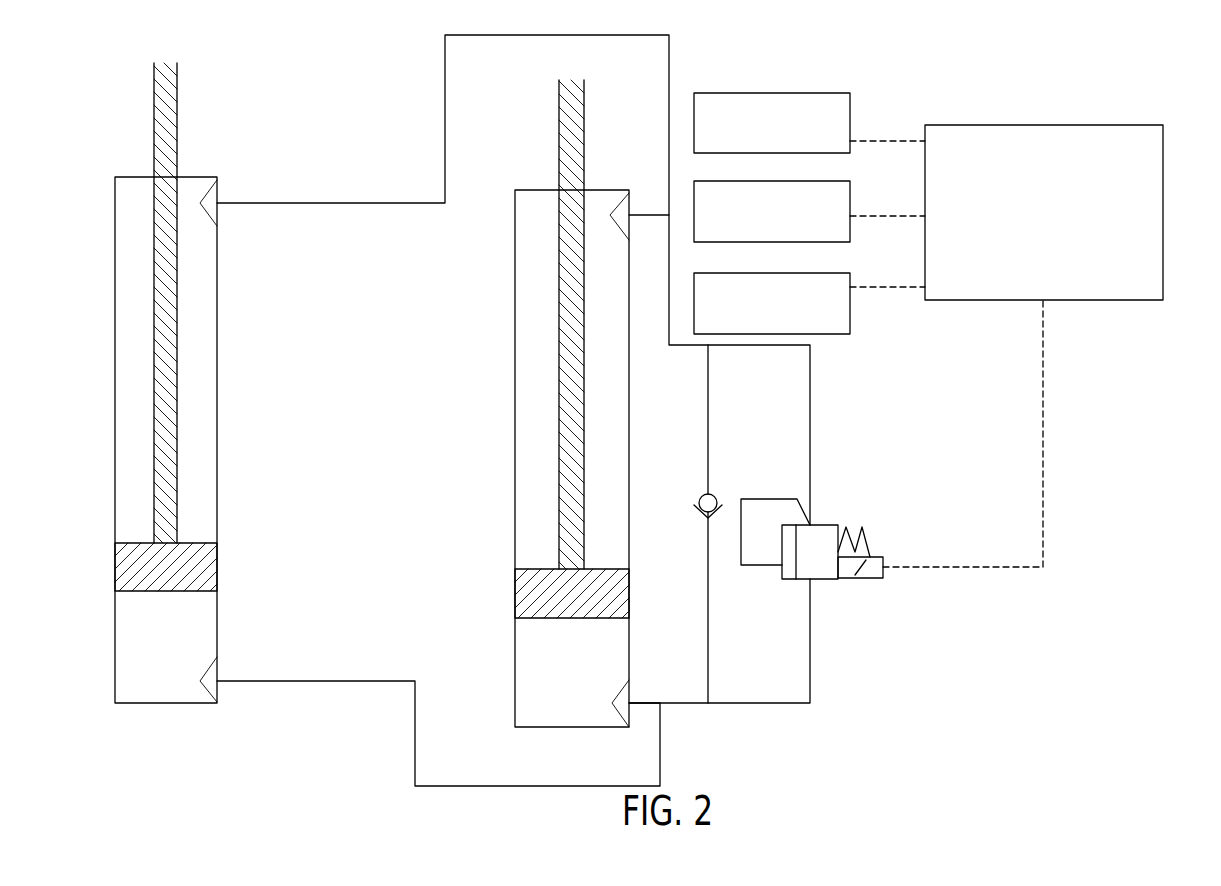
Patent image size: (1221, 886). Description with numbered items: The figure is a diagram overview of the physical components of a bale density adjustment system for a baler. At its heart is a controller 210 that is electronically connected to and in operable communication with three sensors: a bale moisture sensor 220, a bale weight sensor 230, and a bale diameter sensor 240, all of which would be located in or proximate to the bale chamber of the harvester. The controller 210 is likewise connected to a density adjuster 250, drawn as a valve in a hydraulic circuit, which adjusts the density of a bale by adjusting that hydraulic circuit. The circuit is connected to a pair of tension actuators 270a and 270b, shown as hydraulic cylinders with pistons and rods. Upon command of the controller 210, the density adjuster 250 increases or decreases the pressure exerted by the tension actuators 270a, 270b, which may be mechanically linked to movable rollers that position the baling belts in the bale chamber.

The controller 210 is at (1163, 207).
The bale moisture sensor 220 is at (850, 105).
The bale weight sensor 230 is at (850, 193).
The bale diameter sensor 240 is at (850, 280).
The density adjuster 250 is at (873, 580).
The tension actuator 270a is at (525, 595).
The tension actuator 270b is at (205, 568).